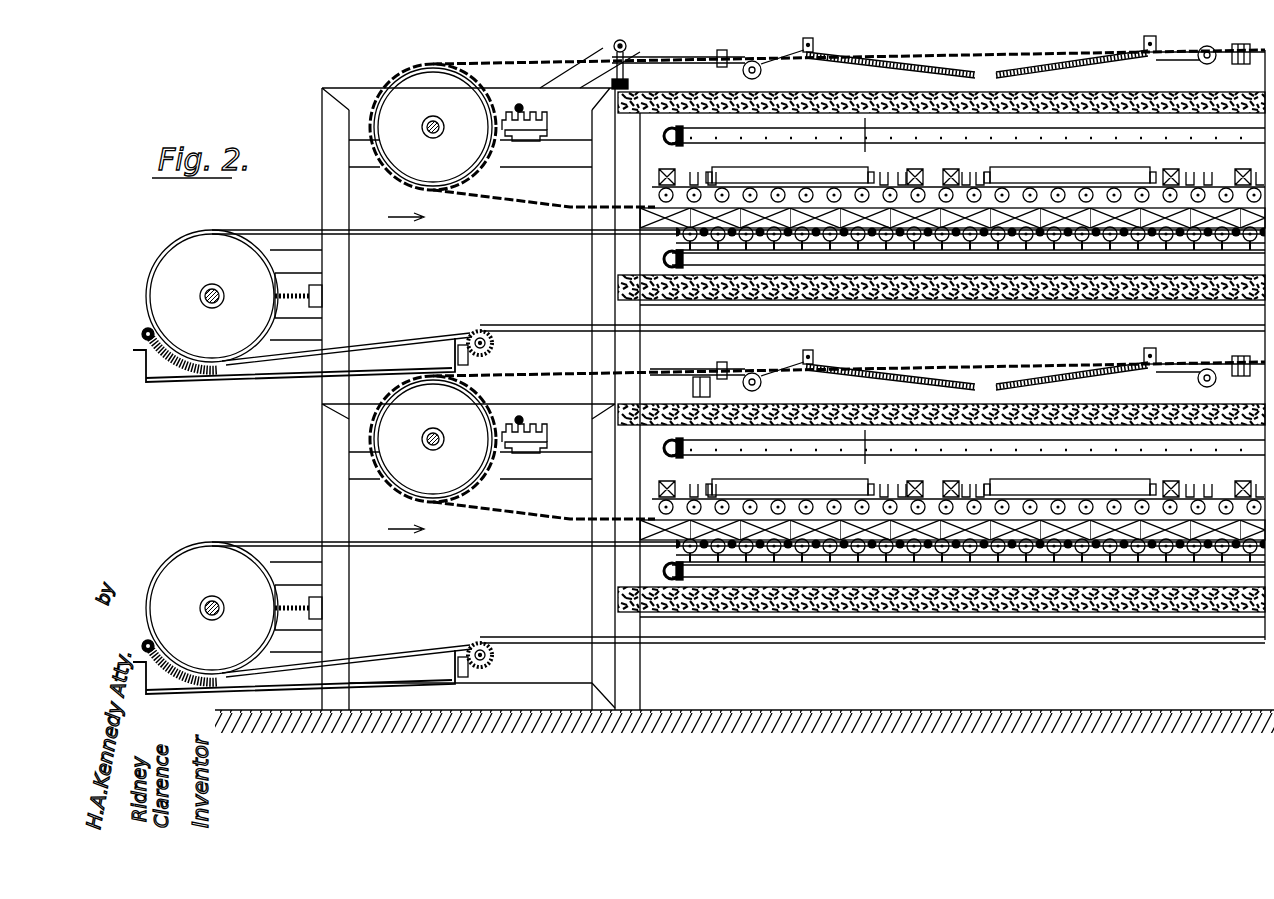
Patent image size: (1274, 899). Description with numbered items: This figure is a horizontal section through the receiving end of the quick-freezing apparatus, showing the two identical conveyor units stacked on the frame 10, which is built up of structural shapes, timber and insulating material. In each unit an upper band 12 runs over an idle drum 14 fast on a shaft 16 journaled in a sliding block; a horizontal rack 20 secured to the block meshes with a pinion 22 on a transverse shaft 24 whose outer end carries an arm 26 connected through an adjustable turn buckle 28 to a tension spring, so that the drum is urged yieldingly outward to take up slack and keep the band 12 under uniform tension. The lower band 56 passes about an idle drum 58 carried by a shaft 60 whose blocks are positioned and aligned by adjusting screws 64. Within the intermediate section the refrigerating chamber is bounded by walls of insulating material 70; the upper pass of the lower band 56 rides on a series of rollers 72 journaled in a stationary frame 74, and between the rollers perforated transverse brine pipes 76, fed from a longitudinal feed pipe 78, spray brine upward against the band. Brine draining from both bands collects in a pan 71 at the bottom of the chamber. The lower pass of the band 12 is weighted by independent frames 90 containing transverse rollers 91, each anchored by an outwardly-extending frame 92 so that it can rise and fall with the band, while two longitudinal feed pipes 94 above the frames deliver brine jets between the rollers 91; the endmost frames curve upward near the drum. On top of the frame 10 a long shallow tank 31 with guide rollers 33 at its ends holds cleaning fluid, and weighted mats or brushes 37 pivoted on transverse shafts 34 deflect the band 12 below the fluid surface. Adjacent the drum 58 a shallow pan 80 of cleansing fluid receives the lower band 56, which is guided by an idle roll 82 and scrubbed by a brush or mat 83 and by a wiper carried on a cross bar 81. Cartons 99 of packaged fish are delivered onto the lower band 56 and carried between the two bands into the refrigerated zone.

The frame 10 is at (628, 700).
The upper band 12 is at (507, 56).
The idle drum 14 is at (413, 88).
The shaft 16 is at (410, 142).
The rack 20 is at (541, 142).
The pinion 22 is at (547, 124).
The transverse shaft 24 is at (520, 104).
The arm 26 is at (605, 49).
The turn buckle 28 is at (628, 82).
The shallow tank 31 is at (1158, 70).
The rollers 33 is at (772, 54).
The transverse shafts 34 is at (815, 46).
The weighted mats or brushes 37 is at (900, 63).
The lower band 56 is at (402, 234).
The idle drum 58 is at (180, 272).
The shaft 60 is at (200, 296).
The adjusting screws 64 is at (284, 262).
The insulating material 70 is at (1160, 618).
The tank or pan 71 is at (640, 258).
The rollers 72 is at (832, 243).
The stationary frame 74 is at (754, 243).
The brine pipe 76 is at (1076, 243).
The feed pipe 78 is at (907, 262).
The tank or pan 80 is at (160, 373).
The cross bar 81 is at (140, 339).
The idle roll 82 is at (495, 347).
The brush or mat 83 is at (212, 388).
The frames 90 is at (873, 186).
The rollers 91 is at (929, 184).
The outwardly-extending frame 92 is at (742, 152).
The feed pipes 94 is at (1235, 140).
The carton 99 is at (640, 211).